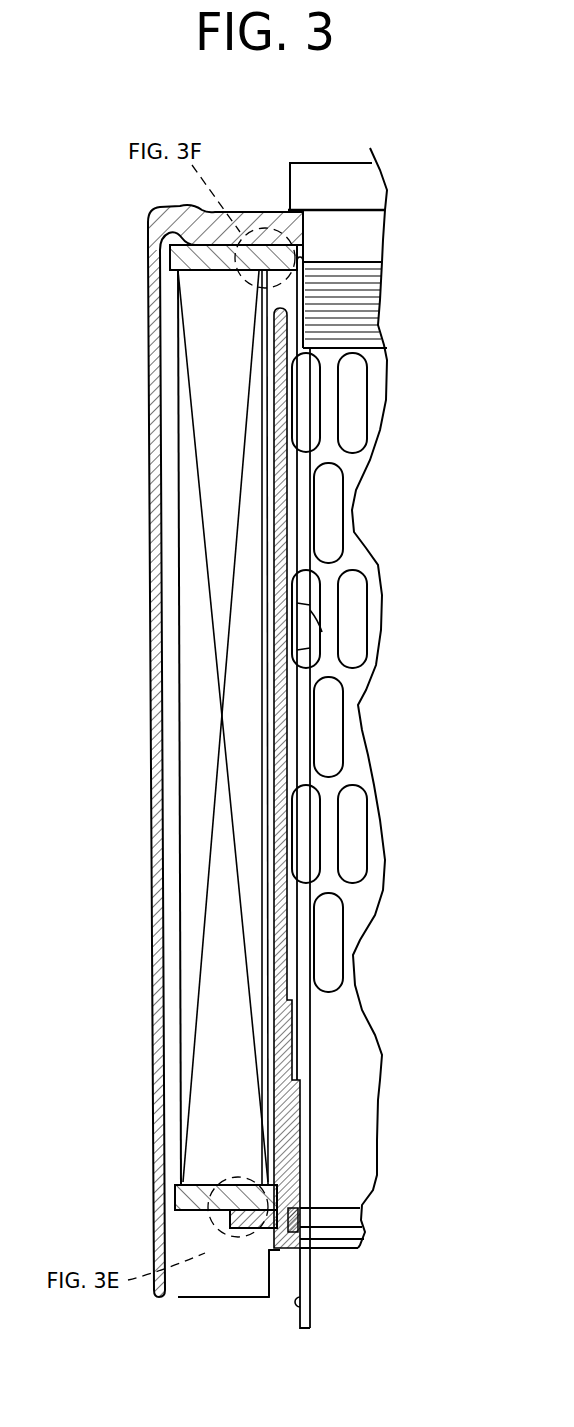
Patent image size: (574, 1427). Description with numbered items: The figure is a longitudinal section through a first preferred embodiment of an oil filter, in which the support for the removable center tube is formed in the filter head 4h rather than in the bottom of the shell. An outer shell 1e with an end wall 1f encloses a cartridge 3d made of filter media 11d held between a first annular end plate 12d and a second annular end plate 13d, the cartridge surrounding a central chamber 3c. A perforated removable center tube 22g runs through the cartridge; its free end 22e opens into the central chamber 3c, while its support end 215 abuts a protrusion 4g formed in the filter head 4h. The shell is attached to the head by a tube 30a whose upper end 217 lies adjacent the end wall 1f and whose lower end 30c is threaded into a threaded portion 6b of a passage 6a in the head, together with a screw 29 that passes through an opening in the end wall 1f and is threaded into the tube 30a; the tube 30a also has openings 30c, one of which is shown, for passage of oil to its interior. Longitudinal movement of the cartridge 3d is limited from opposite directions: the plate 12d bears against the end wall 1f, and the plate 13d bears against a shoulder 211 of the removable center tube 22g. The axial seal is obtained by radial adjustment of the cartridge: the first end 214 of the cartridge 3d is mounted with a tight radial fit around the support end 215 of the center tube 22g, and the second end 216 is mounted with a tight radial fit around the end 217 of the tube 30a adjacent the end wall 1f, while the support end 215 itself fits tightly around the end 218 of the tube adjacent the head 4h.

The outer shell 1e is at (153, 843).
The end wall 1f is at (172, 205).
The central chamber 3c is at (283, 297).
The cartridge 3d is at (178, 758).
The protrusion 4g is at (192, 1298).
The filter head 4h is at (187, 1298).
The passage 6a is at (263, 1235).
The threaded portion 6b is at (307, 1275).
The filter media 11d is at (202, 692).
The first annular end plate 12d is at (178, 280).
The second annular end plate 13d is at (183, 1198).
The free end 22e is at (283, 307).
The removable center tube 22g is at (280, 1112).
The screw 29 is at (320, 162).
The tube 30a is at (307, 400).
The openings 30c is at (322, 632).
The shoulder 211 is at (243, 1227).
The first end of cartridge 214 is at (207, 1165).
The support end 215 is at (285, 1252).
The second end of cartridge 216 is at (223, 293).
The end of tube 217 is at (302, 210).
The end of tube adjacent head 218 is at (303, 1193).